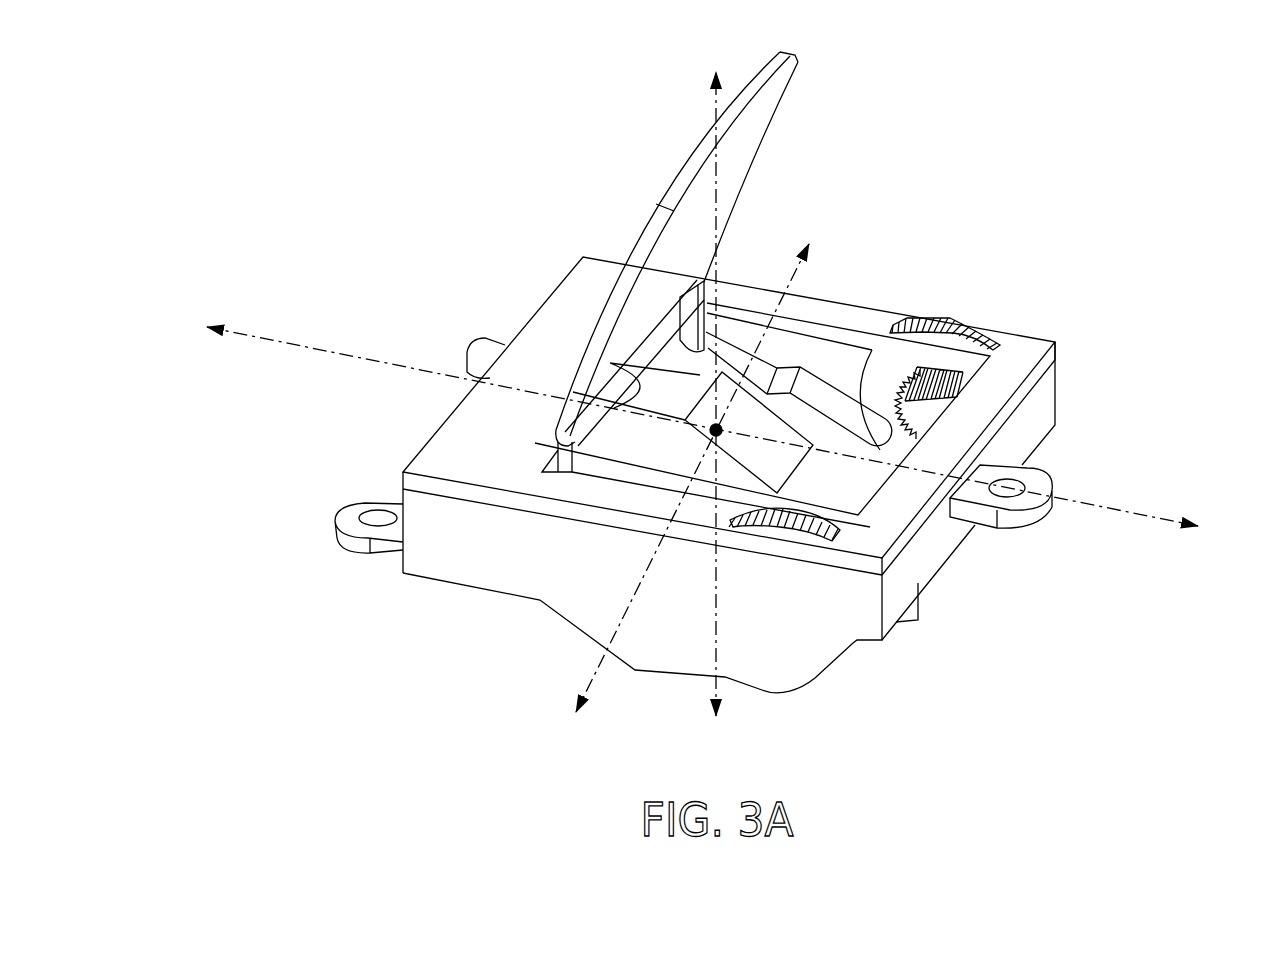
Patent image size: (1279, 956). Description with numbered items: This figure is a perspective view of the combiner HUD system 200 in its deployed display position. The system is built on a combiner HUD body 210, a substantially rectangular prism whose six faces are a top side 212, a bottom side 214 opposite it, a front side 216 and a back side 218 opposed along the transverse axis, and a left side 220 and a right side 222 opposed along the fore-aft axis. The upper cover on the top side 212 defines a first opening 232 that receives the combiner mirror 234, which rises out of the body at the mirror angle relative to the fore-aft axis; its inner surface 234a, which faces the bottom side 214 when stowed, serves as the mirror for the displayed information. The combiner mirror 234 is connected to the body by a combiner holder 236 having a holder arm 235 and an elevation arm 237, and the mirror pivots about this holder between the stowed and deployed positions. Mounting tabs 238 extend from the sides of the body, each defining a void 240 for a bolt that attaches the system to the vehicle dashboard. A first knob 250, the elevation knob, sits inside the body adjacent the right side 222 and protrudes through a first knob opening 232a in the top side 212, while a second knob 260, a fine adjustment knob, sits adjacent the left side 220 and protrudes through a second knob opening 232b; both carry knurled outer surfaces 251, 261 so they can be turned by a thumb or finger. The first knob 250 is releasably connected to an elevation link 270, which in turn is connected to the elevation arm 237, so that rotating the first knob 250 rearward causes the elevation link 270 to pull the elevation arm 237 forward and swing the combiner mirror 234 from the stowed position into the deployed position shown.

The combiner HUD system 200 is at (311, 143).
The combiner HUD body 210 is at (566, 312).
The top side 212 is at (587, 282).
The bottom side 214 is at (899, 627).
The front side 216 is at (1060, 402).
The back side 218 is at (396, 489).
The left side 220 is at (1026, 330).
The right side 222 is at (466, 567).
The first opening 232 is at (795, 331).
The first knob opening 232a is at (896, 326).
The second knob opening 232b is at (822, 540).
The combiner mirror 234 is at (799, 62).
The inner surface 234a is at (764, 118).
The holder arm 235 is at (595, 405).
The combiner holder 236 is at (558, 452).
The elevation arm 237 is at (710, 282).
The mounting tab 238 is at (481, 352).
The void 240 is at (370, 512).
The first knob 250 is at (926, 320).
The knurled outer surface 251 is at (952, 322).
The second knob 260 is at (786, 532).
The knurled outer surface 261 is at (776, 527).
The elevation link 270 is at (846, 420).